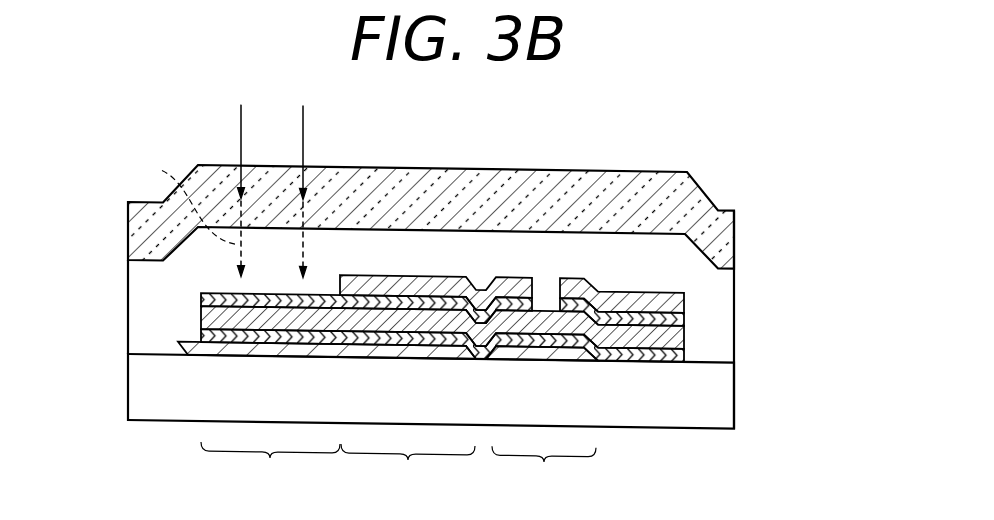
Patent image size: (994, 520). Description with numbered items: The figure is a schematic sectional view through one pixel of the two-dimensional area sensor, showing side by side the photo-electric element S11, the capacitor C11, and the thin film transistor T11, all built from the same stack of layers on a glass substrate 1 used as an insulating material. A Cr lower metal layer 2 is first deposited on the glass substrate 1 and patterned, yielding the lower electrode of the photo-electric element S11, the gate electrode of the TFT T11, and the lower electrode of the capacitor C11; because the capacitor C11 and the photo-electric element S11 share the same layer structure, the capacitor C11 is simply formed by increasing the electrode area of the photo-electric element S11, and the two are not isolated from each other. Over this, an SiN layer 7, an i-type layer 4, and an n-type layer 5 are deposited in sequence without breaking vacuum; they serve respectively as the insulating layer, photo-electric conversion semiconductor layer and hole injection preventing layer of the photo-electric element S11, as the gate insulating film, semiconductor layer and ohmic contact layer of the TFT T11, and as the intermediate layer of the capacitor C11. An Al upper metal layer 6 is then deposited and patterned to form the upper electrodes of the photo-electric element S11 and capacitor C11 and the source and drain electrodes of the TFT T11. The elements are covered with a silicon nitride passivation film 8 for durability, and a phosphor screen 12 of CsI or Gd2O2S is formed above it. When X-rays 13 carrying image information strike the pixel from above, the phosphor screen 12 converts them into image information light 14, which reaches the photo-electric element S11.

The glass substrate 1 is at (720, 389).
The lower metal layer 2 is at (185, 347).
The i-type layer 4 is at (212, 312).
The n-type layer 5 is at (215, 299).
The upper metal layer 6 is at (403, 273).
The SiN layer 7 is at (215, 333).
The passivation film 8 is at (720, 311).
The phosphor screen 12 is at (734, 234).
The X-rays 13 is at (306, 140).
The image information light 14 is at (185, 200).
The photo-electric element S11 is at (270, 470).
The capacitor C11 is at (408, 471).
The thin film transistor T11 is at (544, 473).